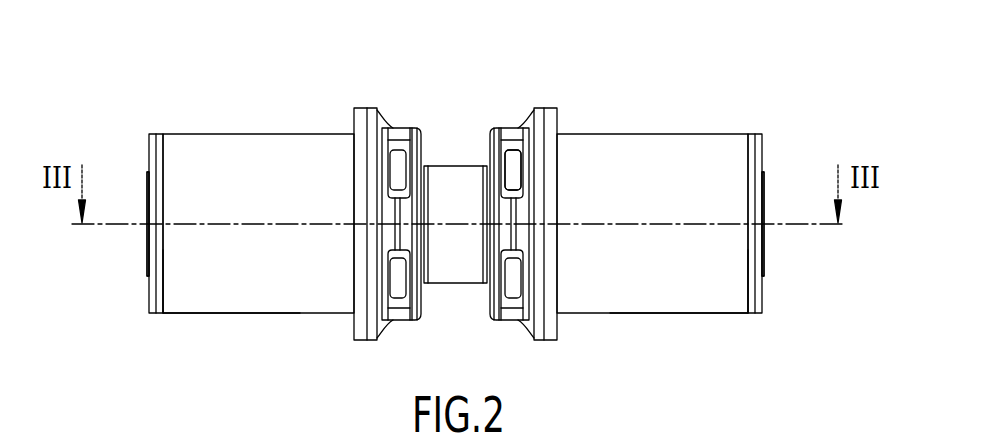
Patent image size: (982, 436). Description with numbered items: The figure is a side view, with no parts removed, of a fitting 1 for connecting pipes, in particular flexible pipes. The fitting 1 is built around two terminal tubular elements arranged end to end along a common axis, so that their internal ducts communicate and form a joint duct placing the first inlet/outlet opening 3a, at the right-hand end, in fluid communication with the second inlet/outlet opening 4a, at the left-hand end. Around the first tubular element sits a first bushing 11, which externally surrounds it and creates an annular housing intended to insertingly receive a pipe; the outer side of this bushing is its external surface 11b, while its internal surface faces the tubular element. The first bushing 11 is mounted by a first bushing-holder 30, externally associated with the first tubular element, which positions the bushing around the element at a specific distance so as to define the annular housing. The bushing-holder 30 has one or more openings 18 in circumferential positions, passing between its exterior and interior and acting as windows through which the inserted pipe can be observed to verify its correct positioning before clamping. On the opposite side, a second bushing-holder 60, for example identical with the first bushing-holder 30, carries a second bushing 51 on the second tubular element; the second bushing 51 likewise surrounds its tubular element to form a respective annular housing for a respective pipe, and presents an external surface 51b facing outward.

The fitting 1 is at (133, 13).
The second bushing 51 is at (226, 106).
The external surface of the second bushing 51b is at (253, 265).
The second inlet/outlet opening 4a is at (147, 239).
The second bushing-holder 60 is at (345, 72).
The first bushing-holder 30 is at (524, 72).
The opening 18 is at (514, 157).
The first bushing 11 is at (700, 98).
The external surface of the first bushing 11b is at (657, 265).
The first inlet/outlet opening 3a is at (764, 190).